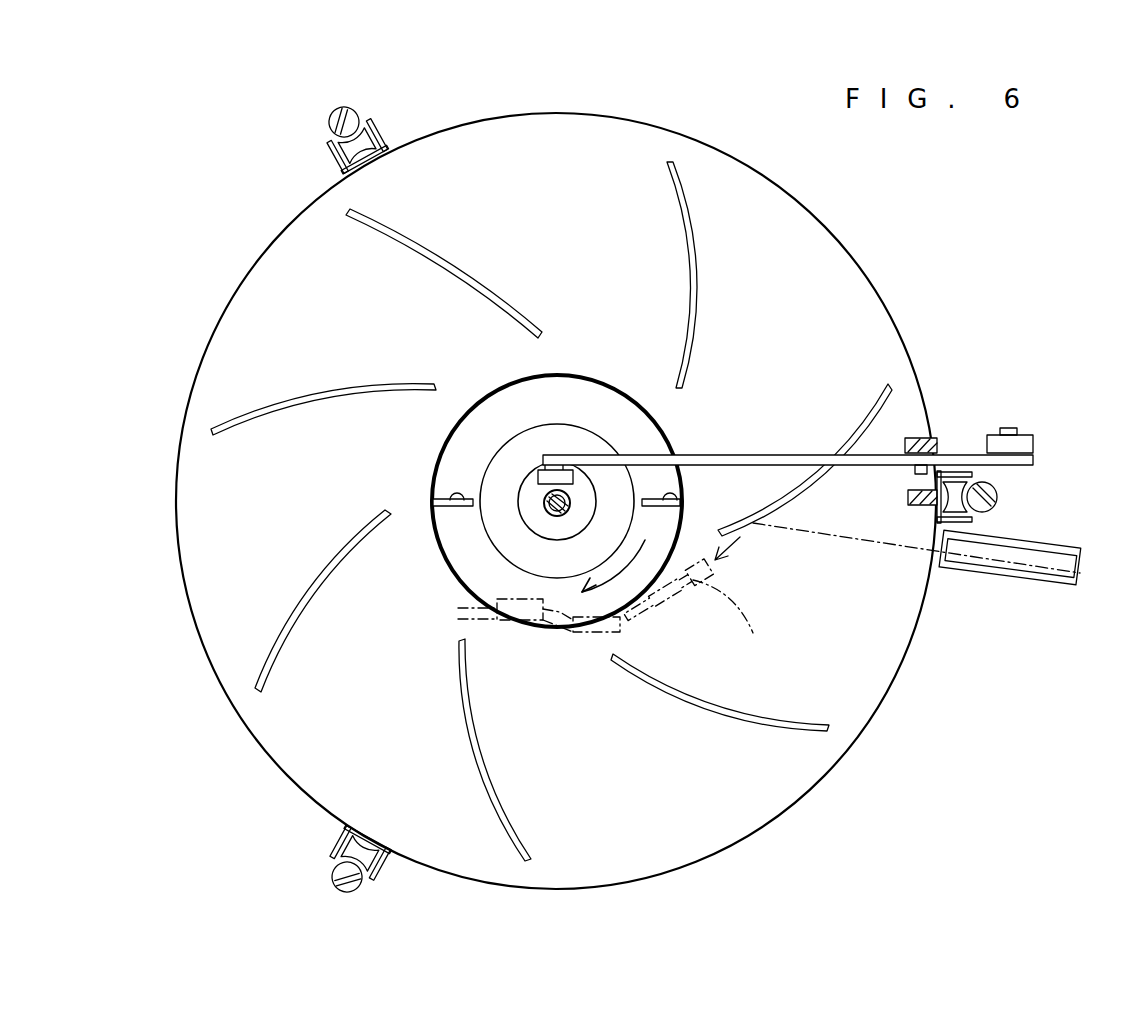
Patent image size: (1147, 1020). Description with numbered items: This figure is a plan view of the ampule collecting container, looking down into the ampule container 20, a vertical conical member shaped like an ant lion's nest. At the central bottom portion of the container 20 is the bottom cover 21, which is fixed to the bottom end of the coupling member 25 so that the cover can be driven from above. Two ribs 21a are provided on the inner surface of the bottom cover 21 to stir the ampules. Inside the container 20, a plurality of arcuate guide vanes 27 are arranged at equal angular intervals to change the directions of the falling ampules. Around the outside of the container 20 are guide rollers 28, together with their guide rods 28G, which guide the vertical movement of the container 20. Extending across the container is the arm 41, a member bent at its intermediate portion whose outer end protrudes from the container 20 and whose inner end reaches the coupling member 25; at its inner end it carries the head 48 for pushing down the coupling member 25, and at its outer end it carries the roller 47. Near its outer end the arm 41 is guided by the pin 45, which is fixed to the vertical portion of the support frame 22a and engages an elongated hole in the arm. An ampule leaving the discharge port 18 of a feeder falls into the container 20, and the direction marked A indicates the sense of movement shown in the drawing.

The discharge port 18 is at (1055, 590).
The ampule container 20 is at (800, 275).
The bottom cover 21 is at (580, 395).
The ribs 21a is at (455, 497).
The support frame 22a is at (925, 437).
The coupling member 25 is at (525, 527).
The arcuate guide vanes 27 is at (660, 215).
The guide rollers 28 is at (978, 508).
The guide rods 28G is at (997, 491).
The arm 41 is at (740, 455).
The pin 45 is at (906, 486).
The roller 47 is at (1035, 440).
The head 48 is at (540, 478).
The tool path A is at (615, 596).